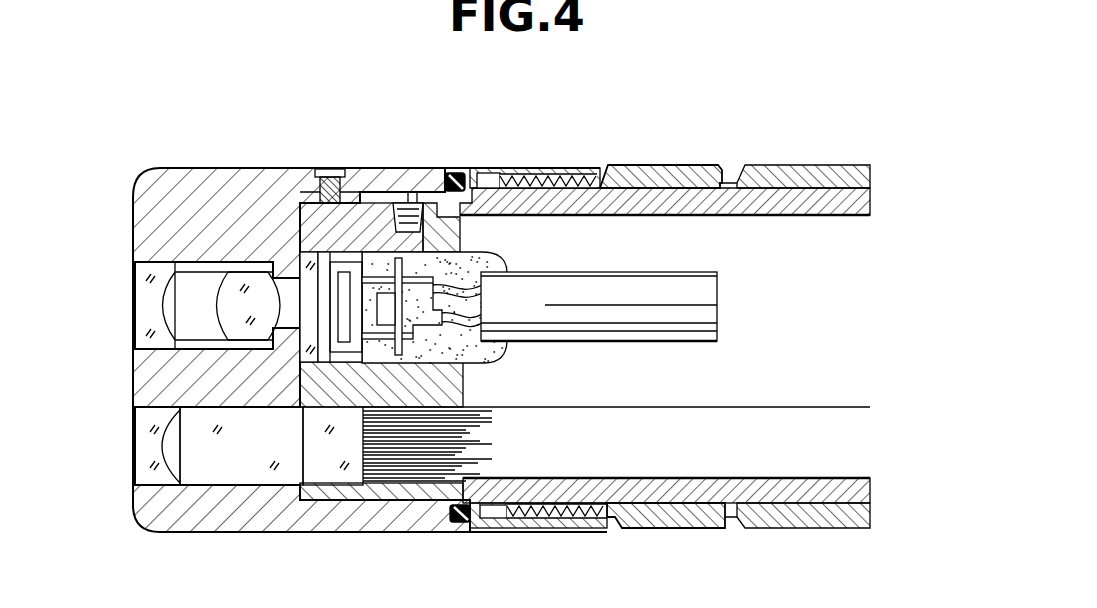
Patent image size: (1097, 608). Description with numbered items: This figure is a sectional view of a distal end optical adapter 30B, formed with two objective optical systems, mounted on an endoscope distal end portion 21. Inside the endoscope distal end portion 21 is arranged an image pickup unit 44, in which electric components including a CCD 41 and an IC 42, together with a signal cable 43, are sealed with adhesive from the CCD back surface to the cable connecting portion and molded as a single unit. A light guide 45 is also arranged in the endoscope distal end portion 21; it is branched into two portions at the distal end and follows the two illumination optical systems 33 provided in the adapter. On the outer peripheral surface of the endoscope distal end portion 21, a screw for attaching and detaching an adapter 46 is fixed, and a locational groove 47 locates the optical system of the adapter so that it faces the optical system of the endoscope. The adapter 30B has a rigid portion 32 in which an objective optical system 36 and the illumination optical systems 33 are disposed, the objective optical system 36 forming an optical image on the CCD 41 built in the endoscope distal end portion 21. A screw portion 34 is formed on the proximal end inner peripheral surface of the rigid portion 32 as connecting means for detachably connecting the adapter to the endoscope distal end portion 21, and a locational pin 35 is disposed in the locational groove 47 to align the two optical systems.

The endoscope distal end portion 21 is at (686, 150).
The distal end optical adapter 30B is at (227, 162).
The rigid portion 32 is at (163, 198).
The illumination optical system 33 is at (130, 435).
The screw portion 34 is at (628, 530).
The locational pin 35 is at (342, 168).
The objective optical system 36 is at (130, 302).
The CCD 41 is at (350, 253).
The IC 42 is at (389, 307).
The signal cable 43 is at (622, 276).
The image pickup unit 44 is at (498, 368).
The light guide 45 is at (775, 437).
The screw for attaching and detaching an adapter 46 is at (712, 166).
The locational groove 47 is at (304, 168).